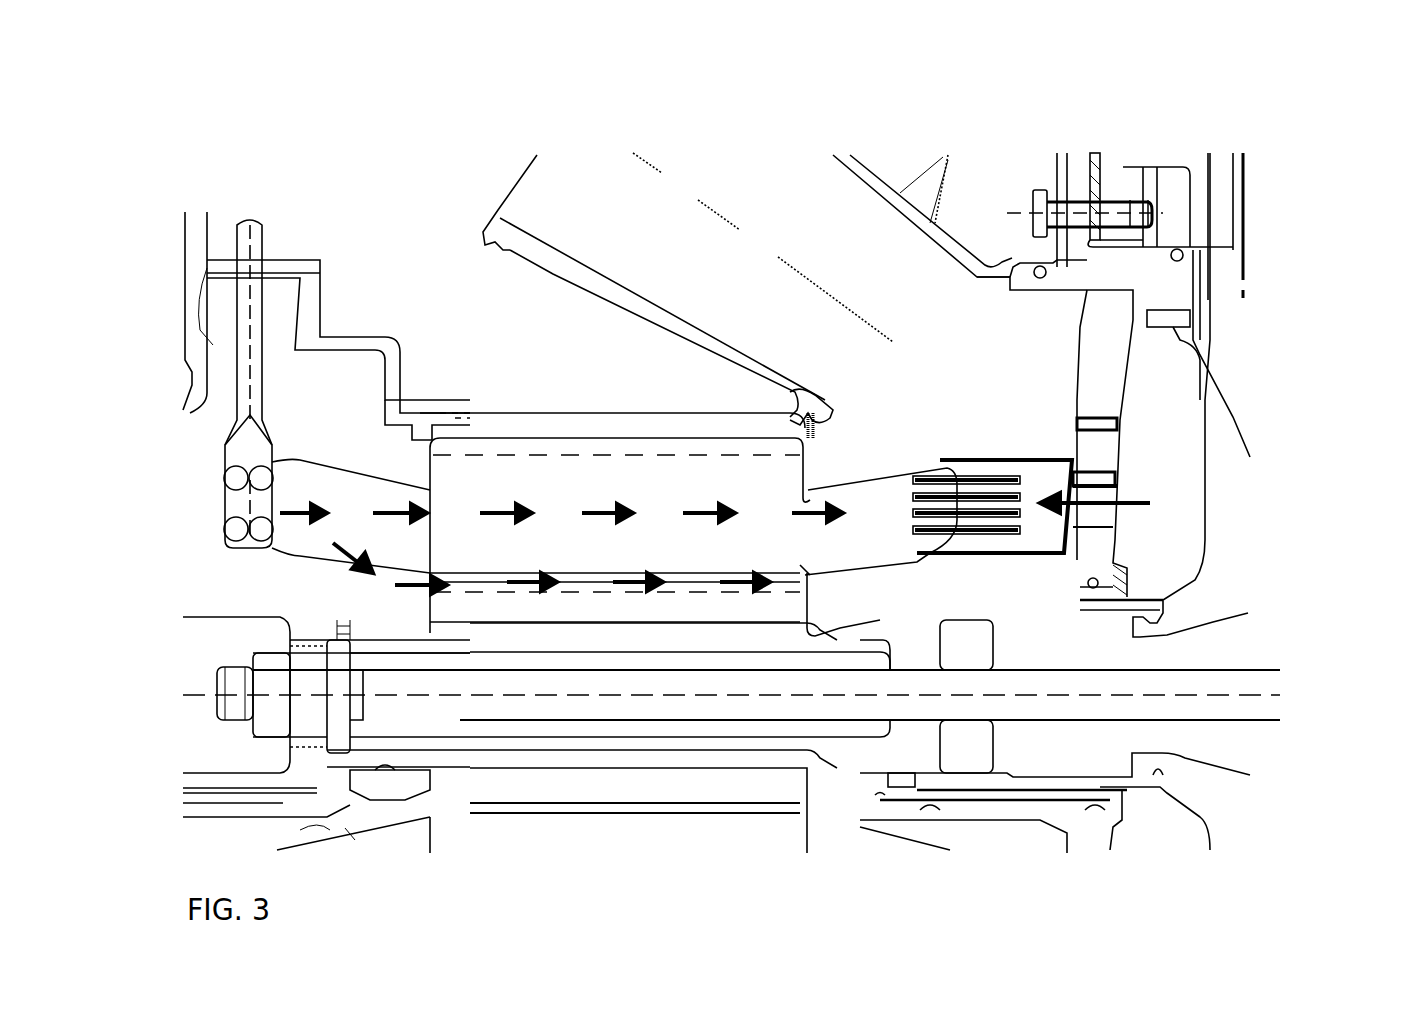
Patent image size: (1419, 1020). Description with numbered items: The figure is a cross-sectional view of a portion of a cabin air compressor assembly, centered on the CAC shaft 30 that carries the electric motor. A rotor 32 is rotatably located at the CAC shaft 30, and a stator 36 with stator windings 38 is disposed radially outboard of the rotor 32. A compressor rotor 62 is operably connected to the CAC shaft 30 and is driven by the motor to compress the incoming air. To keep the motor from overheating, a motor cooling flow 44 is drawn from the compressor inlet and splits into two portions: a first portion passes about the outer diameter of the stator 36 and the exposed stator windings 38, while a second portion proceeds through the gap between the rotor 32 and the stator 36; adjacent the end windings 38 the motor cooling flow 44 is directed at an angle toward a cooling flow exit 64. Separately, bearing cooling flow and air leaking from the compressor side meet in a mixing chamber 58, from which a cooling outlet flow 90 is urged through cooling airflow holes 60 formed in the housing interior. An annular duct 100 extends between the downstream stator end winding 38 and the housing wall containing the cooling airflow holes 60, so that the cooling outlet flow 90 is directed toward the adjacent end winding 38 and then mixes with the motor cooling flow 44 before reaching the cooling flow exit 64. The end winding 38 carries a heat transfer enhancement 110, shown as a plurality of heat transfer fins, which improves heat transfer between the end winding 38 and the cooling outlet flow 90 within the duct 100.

The CAC shaft 30 is at (475, 680).
The rotor 32 is at (612, 603).
The stator 36 is at (548, 477).
The stator windings 38 is at (343, 493).
The motor cooling flow 44 is at (532, 583).
The mixing chamber 58 is at (1167, 565).
The cooling airflow holes 60 is at (1120, 485).
The compressor rotor 62 is at (1247, 520).
The cooling flow exit 64 is at (710, 170).
The cooling outlet flow 90 is at (1120, 507).
The annular duct 100 is at (1013, 457).
The heat transfer enhancement 110 is at (990, 487).